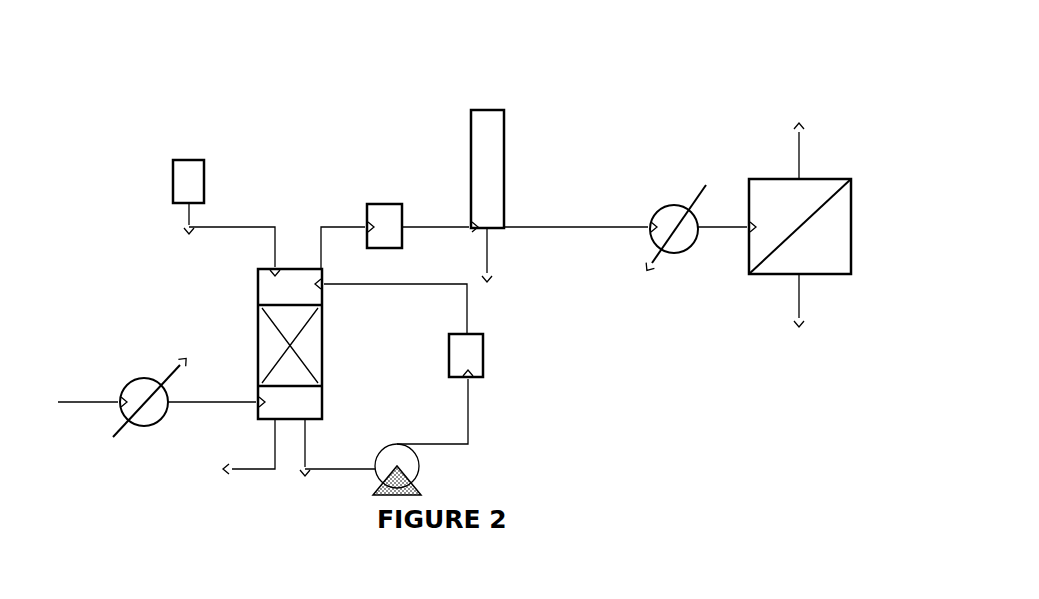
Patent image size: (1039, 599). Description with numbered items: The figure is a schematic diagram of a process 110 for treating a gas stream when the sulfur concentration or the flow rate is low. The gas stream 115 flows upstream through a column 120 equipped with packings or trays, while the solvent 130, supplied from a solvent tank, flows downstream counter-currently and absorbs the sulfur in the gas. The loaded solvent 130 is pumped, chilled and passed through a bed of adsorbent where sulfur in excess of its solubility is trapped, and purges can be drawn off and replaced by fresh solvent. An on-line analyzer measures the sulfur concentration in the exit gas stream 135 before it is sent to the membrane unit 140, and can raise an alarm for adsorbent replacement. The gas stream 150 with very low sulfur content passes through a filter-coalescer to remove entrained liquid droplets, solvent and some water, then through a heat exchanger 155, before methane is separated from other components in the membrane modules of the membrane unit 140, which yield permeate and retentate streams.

The process 110 is at (915, 118).
The gas stream 115 is at (92, 400).
The column 120 is at (257, 339).
The solvent 130 is at (238, 227).
The exit gas stream 135 is at (341, 227).
The gas stream 150 is at (427, 227).
The heat exchanger 155 is at (678, 203).
The membrane unit 140 is at (855, 217).